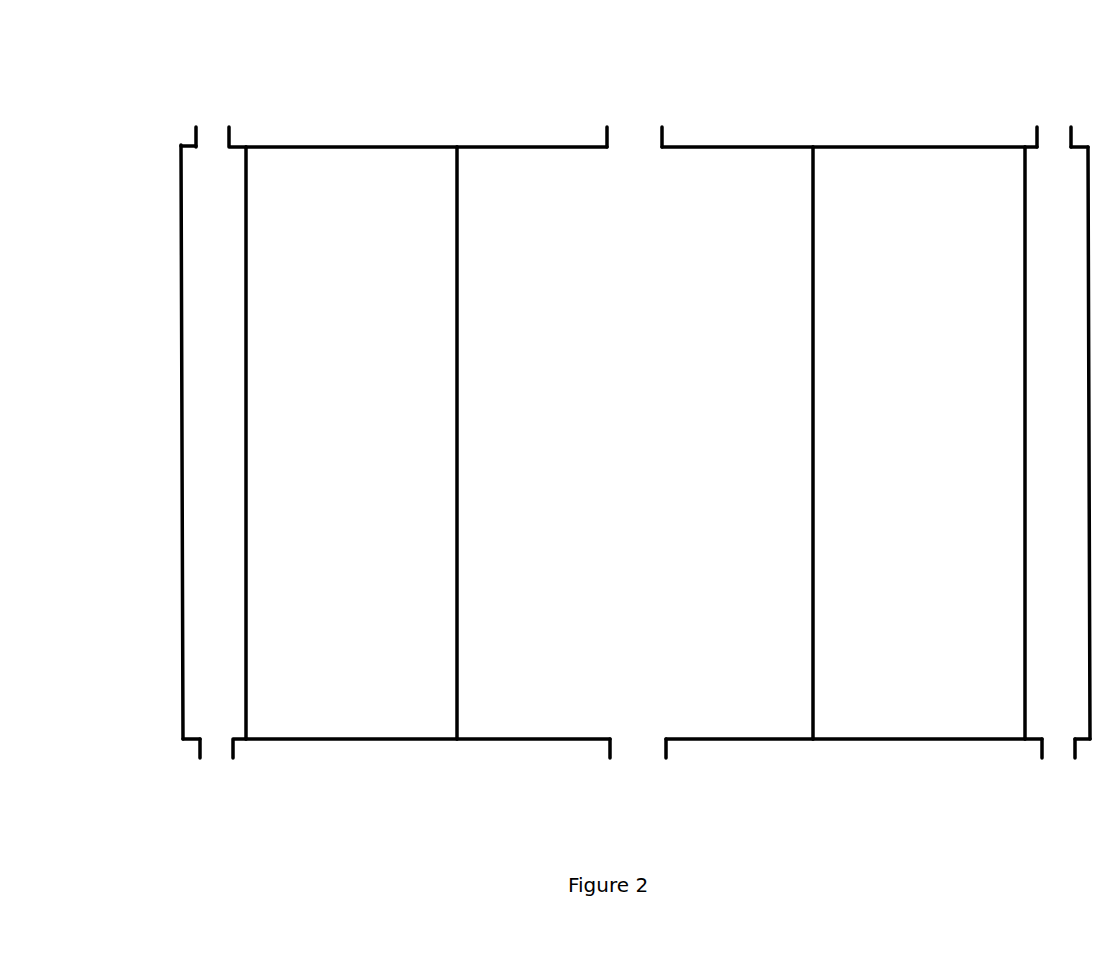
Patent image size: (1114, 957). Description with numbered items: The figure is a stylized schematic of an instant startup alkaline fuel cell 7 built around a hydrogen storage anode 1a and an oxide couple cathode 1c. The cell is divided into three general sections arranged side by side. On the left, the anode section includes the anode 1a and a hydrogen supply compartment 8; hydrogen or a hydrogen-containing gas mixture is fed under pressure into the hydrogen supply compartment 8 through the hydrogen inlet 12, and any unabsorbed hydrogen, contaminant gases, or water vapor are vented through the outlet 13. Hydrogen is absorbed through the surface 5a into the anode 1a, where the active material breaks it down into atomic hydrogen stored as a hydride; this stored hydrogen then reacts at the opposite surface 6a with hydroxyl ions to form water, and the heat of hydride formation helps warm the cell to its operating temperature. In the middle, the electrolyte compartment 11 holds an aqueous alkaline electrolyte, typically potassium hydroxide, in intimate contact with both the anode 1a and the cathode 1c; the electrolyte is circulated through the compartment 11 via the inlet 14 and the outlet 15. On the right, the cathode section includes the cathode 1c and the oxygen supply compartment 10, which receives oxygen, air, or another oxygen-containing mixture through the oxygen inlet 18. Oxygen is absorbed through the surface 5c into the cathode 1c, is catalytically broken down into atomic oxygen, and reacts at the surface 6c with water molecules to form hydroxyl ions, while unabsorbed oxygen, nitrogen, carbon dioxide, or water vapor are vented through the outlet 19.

The anode 1a is at (351, 443).
The cathode 1c is at (919, 443).
The anode surface 5a is at (250, 173).
The cathode surface 5c is at (1018, 172).
The anode surface 6a is at (462, 173).
The cathode surface 6c is at (810, 172).
The alkaline fuel cell 7 is at (172, 288).
The hydrogen supply compartment 8 is at (199, 442).
The oxygen supply compartment 10 is at (1057, 443).
The electrolyte compartment 11 is at (635, 443).
The hydrogen inlet 12 is at (211, 139).
The outlet 13 is at (216, 749).
The inlet 14 is at (633, 139).
The outlet 15 is at (639, 747).
The oxygen inlet 18 is at (1055, 139).
The outlet 19 is at (1060, 746).